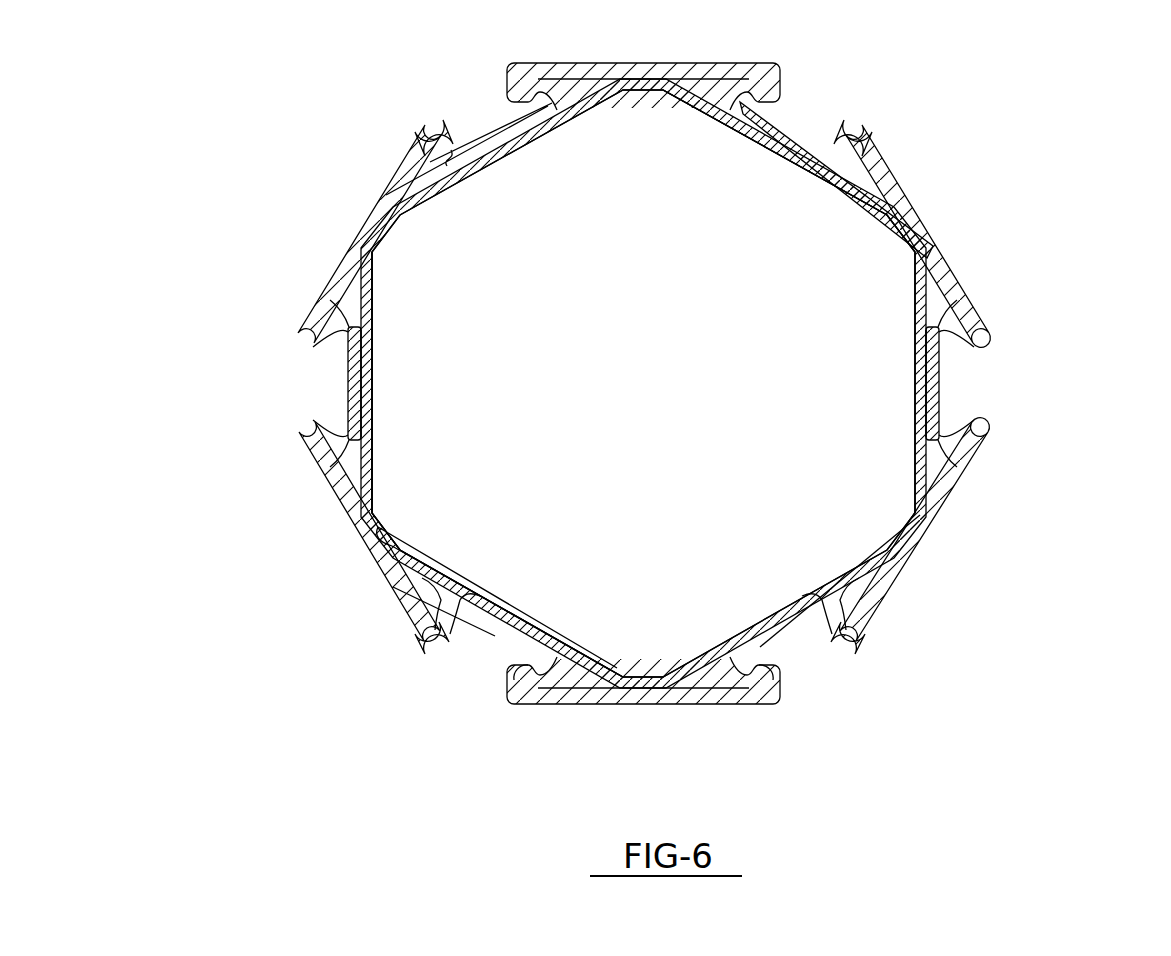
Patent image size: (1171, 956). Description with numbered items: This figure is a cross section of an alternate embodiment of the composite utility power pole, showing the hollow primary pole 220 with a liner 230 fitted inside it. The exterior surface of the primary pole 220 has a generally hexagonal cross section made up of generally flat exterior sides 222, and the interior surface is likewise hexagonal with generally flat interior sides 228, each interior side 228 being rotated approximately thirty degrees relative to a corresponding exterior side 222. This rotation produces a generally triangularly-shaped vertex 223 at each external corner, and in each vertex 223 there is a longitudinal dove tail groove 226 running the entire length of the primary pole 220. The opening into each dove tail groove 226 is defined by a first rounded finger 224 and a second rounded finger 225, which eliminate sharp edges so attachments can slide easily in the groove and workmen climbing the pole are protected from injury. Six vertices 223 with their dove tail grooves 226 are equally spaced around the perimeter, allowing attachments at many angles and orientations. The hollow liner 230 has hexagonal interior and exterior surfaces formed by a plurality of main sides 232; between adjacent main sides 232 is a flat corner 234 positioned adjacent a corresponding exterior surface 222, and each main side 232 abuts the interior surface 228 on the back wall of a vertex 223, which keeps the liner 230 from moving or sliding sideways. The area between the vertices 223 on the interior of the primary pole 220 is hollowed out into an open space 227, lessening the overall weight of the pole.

The primary pole 220 is at (903, 140).
The exterior side 222 is at (320, 283).
The vertex 223 is at (497, 140).
The first rounded finger 224 is at (433, 640).
The second rounded finger 225 is at (973, 330).
The dove tail groove 226 is at (497, 122).
The open space 227 is at (415, 175).
The interior side 228 is at (373, 353).
The liner 230 is at (590, 135).
The main side 232 is at (755, 125).
The flat corner 234 is at (905, 233).